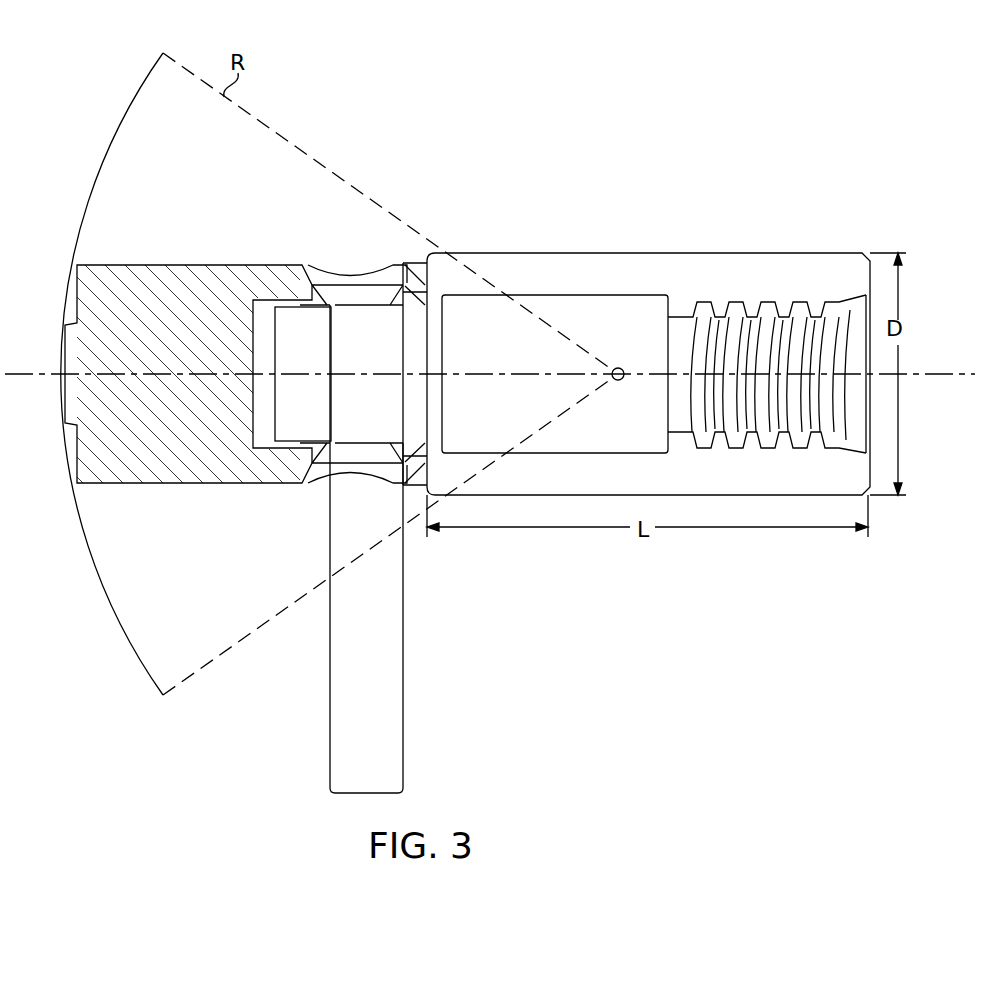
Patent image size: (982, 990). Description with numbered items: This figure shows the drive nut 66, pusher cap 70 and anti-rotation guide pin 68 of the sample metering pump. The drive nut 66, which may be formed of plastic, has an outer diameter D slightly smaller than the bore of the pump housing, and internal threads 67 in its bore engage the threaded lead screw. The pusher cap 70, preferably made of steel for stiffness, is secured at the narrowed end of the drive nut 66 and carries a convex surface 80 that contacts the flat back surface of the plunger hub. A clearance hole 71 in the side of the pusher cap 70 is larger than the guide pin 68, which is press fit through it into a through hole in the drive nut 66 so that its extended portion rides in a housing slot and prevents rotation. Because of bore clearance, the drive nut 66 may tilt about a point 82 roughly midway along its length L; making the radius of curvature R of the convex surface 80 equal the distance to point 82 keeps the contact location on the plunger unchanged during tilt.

The drive nut 66 is at (658, 253).
The internal threads 67 is at (752, 450).
The anti-rotation guide pin 68 is at (403, 676).
The pusher cap 70 is at (168, 265).
The clearance hole 71 is at (362, 266).
The convex surface 80 is at (67, 352).
The point 82 is at (619, 368).